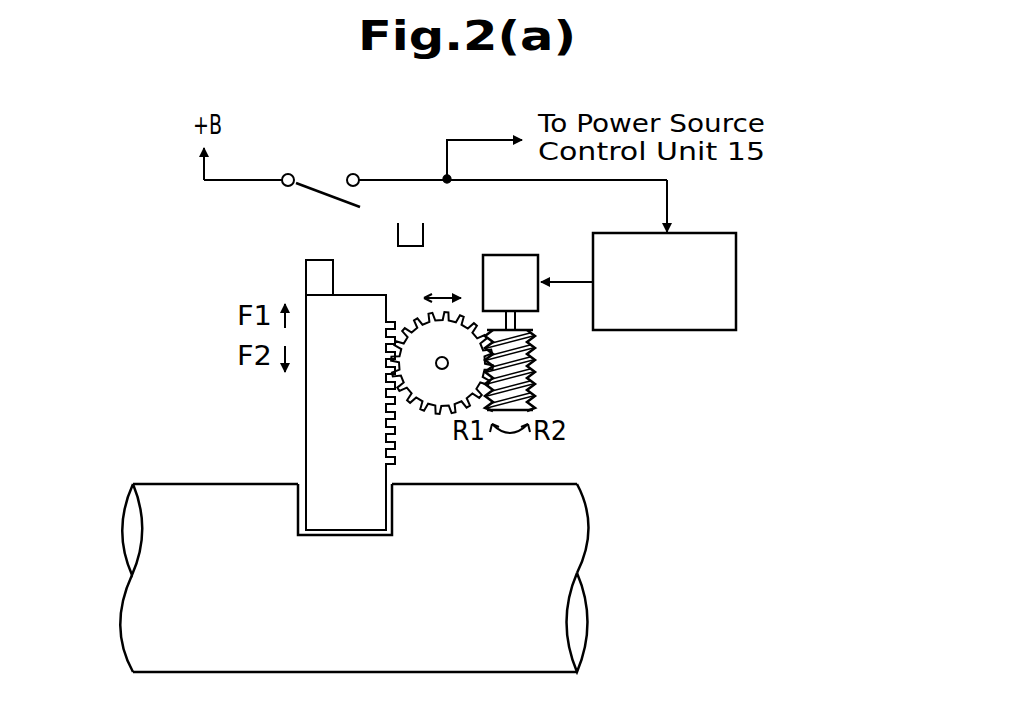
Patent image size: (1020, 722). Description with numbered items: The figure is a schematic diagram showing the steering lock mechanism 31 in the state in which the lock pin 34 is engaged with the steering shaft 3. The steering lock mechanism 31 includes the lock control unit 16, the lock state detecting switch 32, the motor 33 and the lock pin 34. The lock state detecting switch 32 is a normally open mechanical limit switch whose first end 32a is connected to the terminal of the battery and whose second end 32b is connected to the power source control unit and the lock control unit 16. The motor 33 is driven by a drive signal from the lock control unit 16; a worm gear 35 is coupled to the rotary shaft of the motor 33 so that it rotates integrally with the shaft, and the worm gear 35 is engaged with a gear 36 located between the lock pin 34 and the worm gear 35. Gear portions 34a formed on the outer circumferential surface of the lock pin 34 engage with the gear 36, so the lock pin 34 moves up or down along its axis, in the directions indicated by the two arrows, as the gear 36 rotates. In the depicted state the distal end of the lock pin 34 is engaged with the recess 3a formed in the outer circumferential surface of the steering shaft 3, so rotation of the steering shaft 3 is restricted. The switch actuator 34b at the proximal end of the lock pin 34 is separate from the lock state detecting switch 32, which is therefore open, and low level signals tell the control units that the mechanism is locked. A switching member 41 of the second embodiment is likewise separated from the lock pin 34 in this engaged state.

The steering shaft 3 is at (577, 517).
The recess 3a is at (343, 531).
The lock control unit 16 is at (737, 266).
The steering lock mechanism 31 is at (154, 299).
The lock state detecting switch 32 is at (313, 188).
The first end 32a is at (287, 174).
The second end 32b is at (358, 174).
The motor 33 is at (524, 254).
The lock pin 34 is at (306, 420).
The gear portions 34a is at (392, 471).
The switch actuator 34b is at (306, 270).
The worm gear 35 is at (534, 346).
The gear 36 is at (425, 393).
The switching member 41 is at (424, 232).